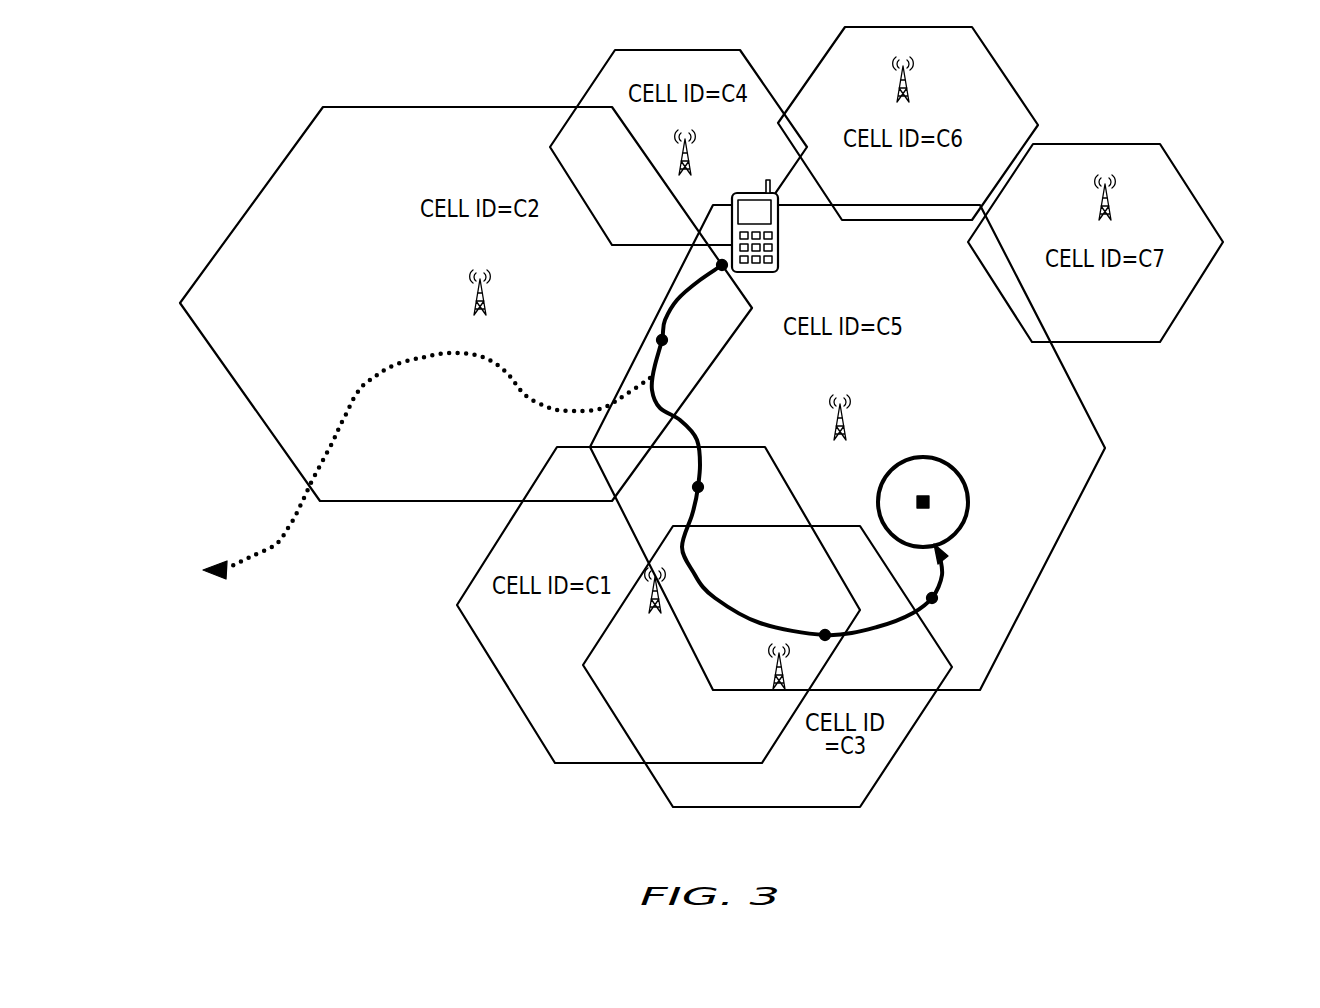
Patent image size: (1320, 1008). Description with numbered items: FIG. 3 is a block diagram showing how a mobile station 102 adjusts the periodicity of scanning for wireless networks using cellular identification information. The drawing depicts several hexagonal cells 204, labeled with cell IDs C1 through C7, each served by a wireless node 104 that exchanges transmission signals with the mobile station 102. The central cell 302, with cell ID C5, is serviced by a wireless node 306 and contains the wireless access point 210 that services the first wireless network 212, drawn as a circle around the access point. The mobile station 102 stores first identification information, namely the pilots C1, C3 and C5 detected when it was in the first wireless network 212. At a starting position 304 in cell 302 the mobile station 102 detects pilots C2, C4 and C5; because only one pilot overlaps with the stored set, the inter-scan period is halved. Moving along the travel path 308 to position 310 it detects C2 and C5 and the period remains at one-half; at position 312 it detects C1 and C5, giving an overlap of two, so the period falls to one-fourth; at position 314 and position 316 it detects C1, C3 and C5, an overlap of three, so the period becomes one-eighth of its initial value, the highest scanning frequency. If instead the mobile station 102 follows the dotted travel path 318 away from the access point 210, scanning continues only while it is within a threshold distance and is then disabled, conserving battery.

The mobile station 102 is at (780, 247).
The wireless node 104 is at (473, 300).
The cells 204 is at (602, 68).
The wireless access point 210 is at (922, 493).
The first wireless network 212 is at (970, 502).
The cell 302 is at (1108, 448).
The position 304 is at (716, 265).
The wireless node 306 is at (832, 430).
The travel path 308 is at (678, 299).
The position 310 is at (668, 338).
The position 312 is at (705, 488).
The position 314 is at (826, 630).
The position 316 is at (940, 598).
The travel path 318 is at (355, 403).